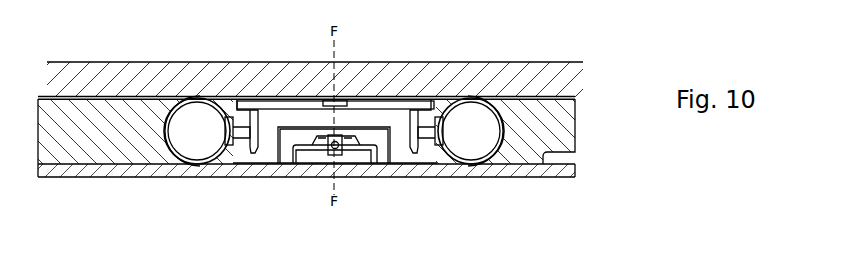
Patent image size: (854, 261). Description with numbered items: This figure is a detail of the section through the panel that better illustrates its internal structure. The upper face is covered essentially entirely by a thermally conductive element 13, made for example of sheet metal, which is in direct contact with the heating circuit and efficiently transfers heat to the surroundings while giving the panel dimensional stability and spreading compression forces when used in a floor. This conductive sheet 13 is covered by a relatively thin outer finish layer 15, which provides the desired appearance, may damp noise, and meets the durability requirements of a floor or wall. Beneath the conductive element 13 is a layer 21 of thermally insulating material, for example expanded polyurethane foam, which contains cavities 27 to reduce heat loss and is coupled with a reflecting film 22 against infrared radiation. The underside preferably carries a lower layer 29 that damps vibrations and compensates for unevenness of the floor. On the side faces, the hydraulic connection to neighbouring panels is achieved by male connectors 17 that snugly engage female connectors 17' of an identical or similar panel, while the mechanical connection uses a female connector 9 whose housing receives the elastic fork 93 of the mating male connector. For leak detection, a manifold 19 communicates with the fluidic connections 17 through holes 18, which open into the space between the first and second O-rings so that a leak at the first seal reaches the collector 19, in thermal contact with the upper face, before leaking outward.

The female connector 9 is at (250, 155).
The thermally conductive element 13 is at (132, 97).
The outer finish layer 15 is at (205, 75).
The male connector 17 is at (484, 49).
The female connector 17' is at (306, 156).
The holes 18 is at (252, 118).
The manifold 19 is at (358, 102).
The insulating layer 21 is at (67, 110).
The reflecting film 22 is at (515, 165).
The cavities 27 is at (563, 162).
The lower layer 29 is at (243, 167).
The elastic fork 93 is at (604, 50).